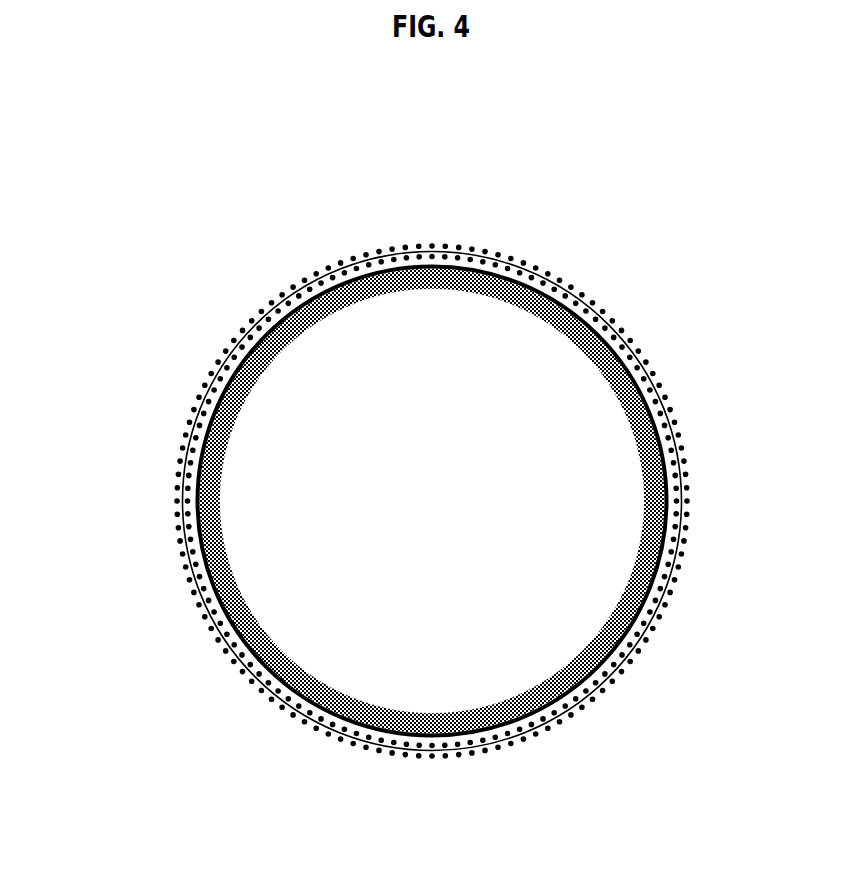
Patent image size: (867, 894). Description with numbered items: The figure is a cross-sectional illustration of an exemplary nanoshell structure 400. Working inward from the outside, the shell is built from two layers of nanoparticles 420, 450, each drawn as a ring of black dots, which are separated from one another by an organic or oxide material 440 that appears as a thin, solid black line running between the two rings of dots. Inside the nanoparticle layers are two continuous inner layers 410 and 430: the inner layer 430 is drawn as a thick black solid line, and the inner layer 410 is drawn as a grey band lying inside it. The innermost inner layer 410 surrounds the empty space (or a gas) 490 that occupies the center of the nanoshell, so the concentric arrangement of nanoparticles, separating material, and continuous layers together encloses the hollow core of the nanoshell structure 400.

The nanoshell structure 400 is at (102, 150).
The inner layer 410 is at (561, 330).
The layer of nanoparticles 420 is at (580, 292).
The inner layer 430 is at (648, 565).
The organic or oxide material 440 is at (643, 360).
The layer of nanoparticles 450 is at (680, 448).
The empty space 490 is at (457, 493).